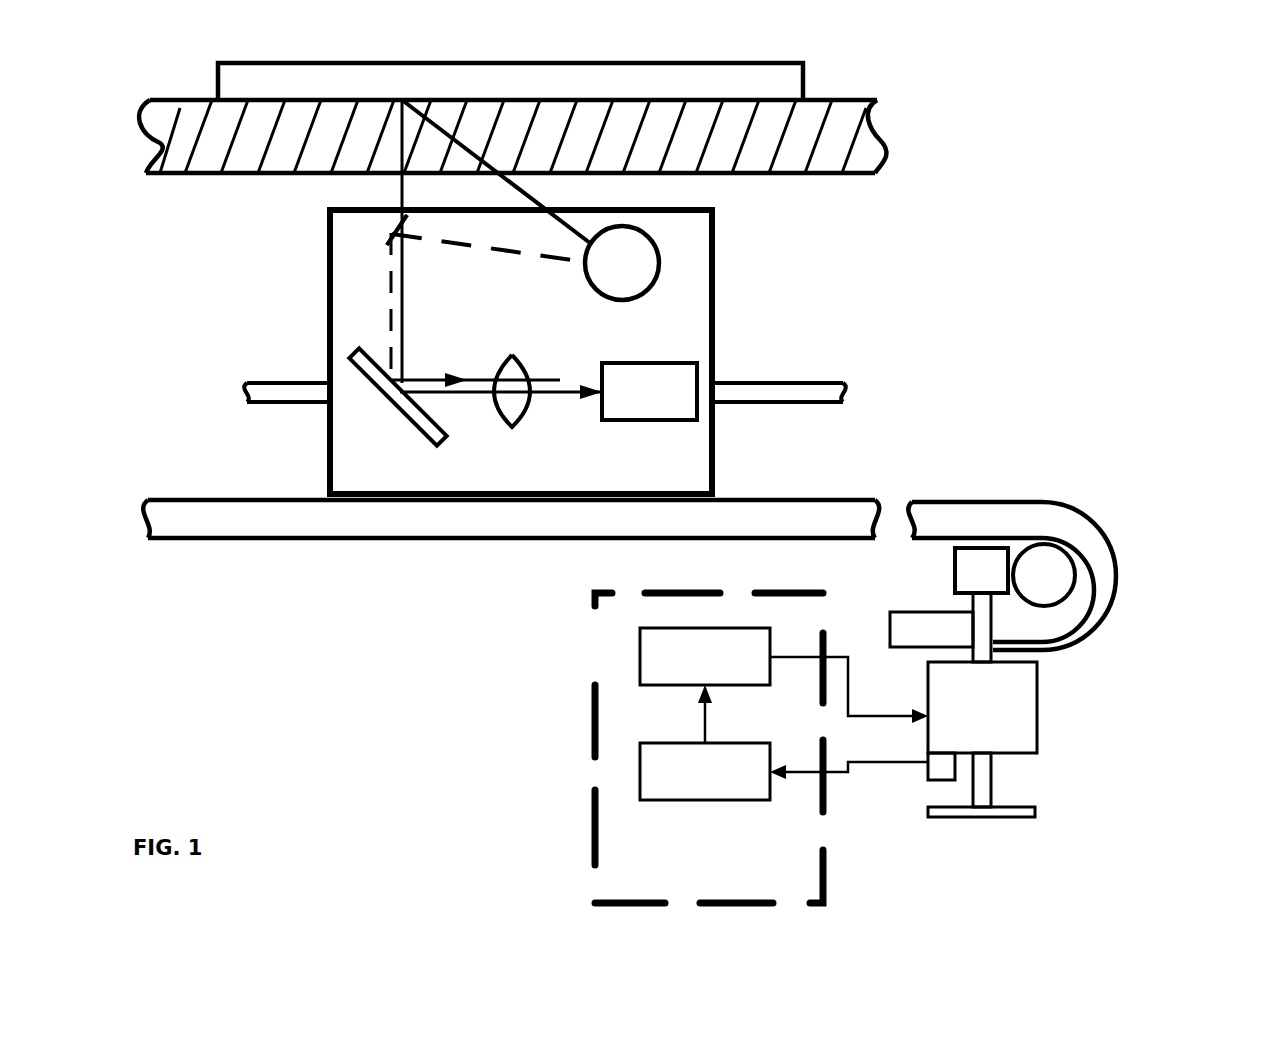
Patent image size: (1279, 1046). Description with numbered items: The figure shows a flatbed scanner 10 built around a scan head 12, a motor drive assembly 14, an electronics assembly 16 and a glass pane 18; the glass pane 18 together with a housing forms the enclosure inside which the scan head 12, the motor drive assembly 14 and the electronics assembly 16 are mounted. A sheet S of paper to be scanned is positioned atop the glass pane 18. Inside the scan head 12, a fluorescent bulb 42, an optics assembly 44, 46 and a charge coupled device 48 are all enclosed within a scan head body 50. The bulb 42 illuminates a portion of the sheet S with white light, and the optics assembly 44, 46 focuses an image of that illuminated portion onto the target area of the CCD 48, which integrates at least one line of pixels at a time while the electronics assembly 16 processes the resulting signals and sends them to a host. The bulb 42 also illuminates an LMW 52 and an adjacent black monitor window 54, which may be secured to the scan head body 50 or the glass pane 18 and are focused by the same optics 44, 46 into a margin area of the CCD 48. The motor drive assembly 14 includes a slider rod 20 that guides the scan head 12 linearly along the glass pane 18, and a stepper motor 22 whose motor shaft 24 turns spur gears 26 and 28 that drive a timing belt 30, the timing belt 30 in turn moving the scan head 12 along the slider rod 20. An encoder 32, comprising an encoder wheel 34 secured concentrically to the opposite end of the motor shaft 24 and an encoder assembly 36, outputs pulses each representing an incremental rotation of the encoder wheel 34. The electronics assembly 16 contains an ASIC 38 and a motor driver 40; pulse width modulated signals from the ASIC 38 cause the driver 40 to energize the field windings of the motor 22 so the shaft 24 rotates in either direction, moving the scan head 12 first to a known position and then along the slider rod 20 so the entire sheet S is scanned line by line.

The flatbed scanner 10 is at (326, 643).
The sheet S is at (805, 78).
The glass pane 18 is at (880, 137).
The scan head 12 is at (732, 283).
The fluorescent bulb 42 is at (659, 263).
The LMW 52 is at (388, 233).
The black monitor window 54 is at (331, 243).
The scan head body 50 is at (330, 358).
The optics assembly 44 is at (406, 413).
The optics assembly 46 is at (512, 427).
The charge coupled device 48 is at (648, 363).
The slider rod 20 is at (820, 383).
The motor drive assembly 14 is at (1058, 690).
The timing belt 30 is at (1100, 530).
The spur gear 28 is at (1056, 589).
The spur gear 26 is at (955, 561).
The stepper motor 22 is at (1037, 722).
The encoder assembly 36 is at (928, 778).
The motor shaft 24 is at (992, 794).
The encoder wheel 34 is at (1035, 811).
The encoder 32 is at (1000, 834).
The electronics assembly 16 is at (733, 752).
The motor driver 40 is at (640, 655).
The ASIC 38 is at (640, 771).